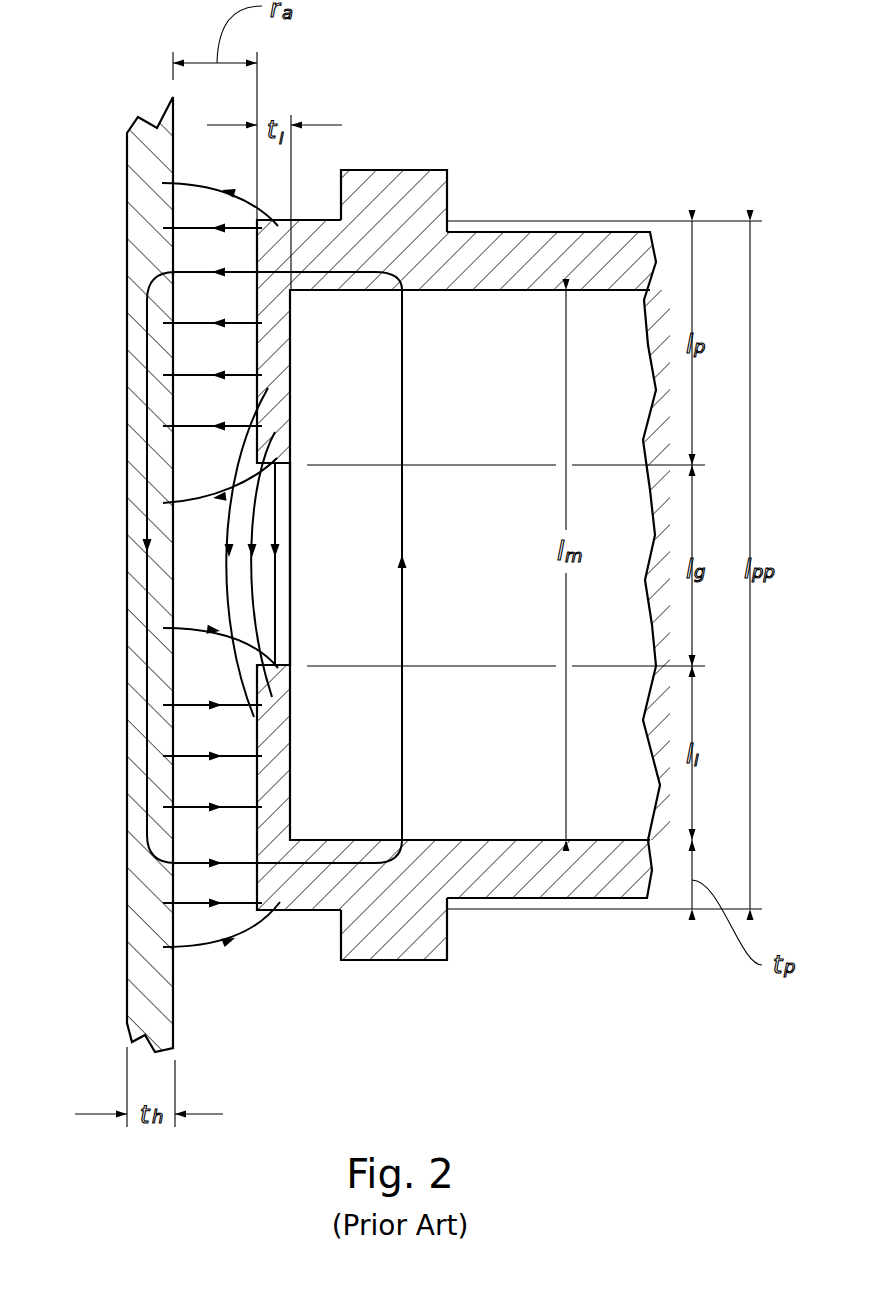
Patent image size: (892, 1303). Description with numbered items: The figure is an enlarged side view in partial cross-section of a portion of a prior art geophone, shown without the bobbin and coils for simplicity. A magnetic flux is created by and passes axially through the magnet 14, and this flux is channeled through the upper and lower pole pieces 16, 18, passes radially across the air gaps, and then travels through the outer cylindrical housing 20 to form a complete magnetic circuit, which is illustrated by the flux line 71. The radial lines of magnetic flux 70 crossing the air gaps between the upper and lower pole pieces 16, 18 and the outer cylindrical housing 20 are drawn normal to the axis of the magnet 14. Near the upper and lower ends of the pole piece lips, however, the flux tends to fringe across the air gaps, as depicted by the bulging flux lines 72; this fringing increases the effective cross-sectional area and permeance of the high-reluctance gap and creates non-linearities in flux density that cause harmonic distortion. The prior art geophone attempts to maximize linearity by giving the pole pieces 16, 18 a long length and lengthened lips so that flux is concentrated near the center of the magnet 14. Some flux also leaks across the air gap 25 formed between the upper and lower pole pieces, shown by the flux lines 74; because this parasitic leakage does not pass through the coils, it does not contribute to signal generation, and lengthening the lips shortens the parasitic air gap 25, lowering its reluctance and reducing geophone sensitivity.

The magnet 14 is at (595, 310).
The upper pole piece 16 is at (482, 231).
The lower pole piece 18 is at (531, 902).
The outer cylindrical housing 20 is at (127, 898).
The air gap 25 is at (305, 562).
The radial lines of magnetic flux 70 is at (202, 323).
The flux line 71 is at (147, 666).
The bulging flux lines 72 is at (191, 503).
The flux lines 74 is at (273, 588).